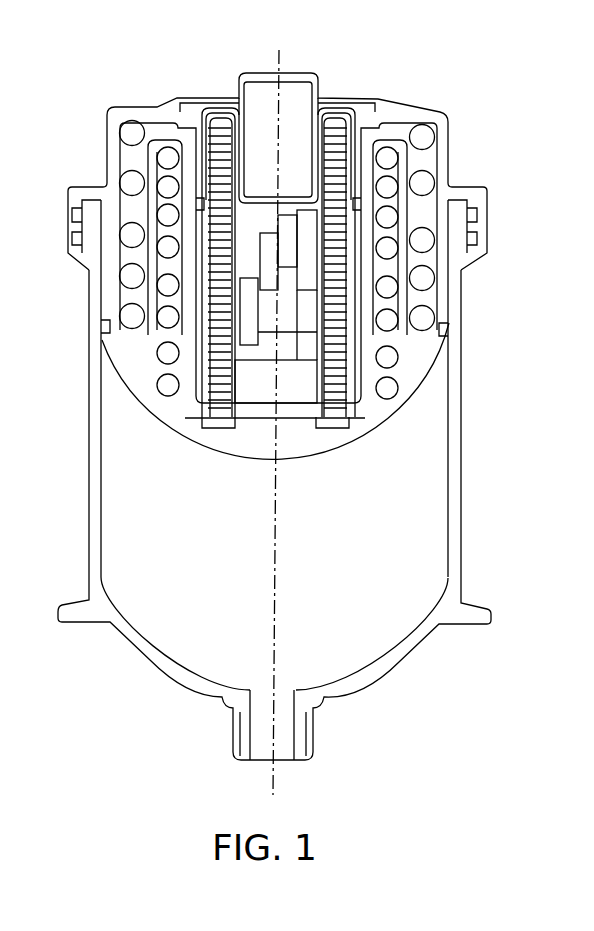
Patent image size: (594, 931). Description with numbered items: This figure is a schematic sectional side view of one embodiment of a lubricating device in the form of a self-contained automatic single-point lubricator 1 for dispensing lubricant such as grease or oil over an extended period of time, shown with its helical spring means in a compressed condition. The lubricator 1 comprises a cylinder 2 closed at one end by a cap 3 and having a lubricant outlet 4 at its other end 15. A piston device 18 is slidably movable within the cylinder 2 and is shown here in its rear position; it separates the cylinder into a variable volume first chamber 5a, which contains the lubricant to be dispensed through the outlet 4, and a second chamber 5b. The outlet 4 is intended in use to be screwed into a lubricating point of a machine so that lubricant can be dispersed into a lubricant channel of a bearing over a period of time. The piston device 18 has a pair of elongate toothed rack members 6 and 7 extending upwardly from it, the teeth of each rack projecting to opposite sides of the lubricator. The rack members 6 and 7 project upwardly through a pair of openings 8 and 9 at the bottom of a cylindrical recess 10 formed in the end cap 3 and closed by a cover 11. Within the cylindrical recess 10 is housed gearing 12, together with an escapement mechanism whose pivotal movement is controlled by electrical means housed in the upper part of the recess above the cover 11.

The lubricator 1 is at (480, 410).
The cylinder 2 is at (461, 497).
The cap 3 is at (110, 150).
The lubricant outlet 4 is at (287, 727).
The first chamber 5a is at (210, 528).
The second chamber 5b is at (142, 357).
The toothed rack member 6 is at (203, 337).
The toothed rack member 7 is at (348, 340).
The opening 8 is at (193, 410).
The opening 9 is at (305, 413).
The cylindrical recess 10 is at (190, 302).
The cover 11 is at (318, 143).
The gearing 12 is at (297, 313).
The other end 15 is at (383, 665).
The piston device 18 is at (380, 415).